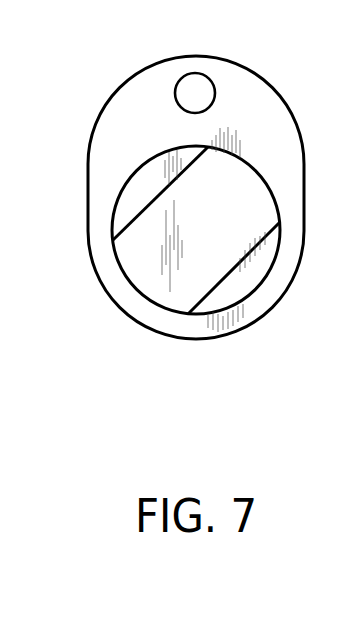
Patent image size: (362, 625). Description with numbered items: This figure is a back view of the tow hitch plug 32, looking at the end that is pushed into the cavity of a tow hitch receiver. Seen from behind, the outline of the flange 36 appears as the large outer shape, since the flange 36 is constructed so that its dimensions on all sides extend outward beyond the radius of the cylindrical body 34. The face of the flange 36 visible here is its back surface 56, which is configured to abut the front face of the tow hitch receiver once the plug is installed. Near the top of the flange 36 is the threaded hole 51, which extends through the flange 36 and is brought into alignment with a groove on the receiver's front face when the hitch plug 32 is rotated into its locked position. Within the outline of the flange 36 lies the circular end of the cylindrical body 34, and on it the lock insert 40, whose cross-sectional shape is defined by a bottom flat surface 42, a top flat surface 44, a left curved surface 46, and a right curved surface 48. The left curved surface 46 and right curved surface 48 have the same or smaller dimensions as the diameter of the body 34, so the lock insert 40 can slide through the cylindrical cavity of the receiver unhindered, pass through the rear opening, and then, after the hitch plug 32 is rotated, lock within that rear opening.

The tow hitch plug 32 is at (224, 346).
The cylindrical body 34 is at (157, 156).
The flange 36 is at (288, 107).
The lock insert 40 is at (134, 209).
The bottom flat surface 42 is at (233, 268).
The top flat surface 44 is at (162, 191).
The left curved surface 46 is at (248, 168).
The right curved surface 48 is at (138, 292).
The threaded hole 51 is at (198, 93).
The back surface 56 is at (255, 97).